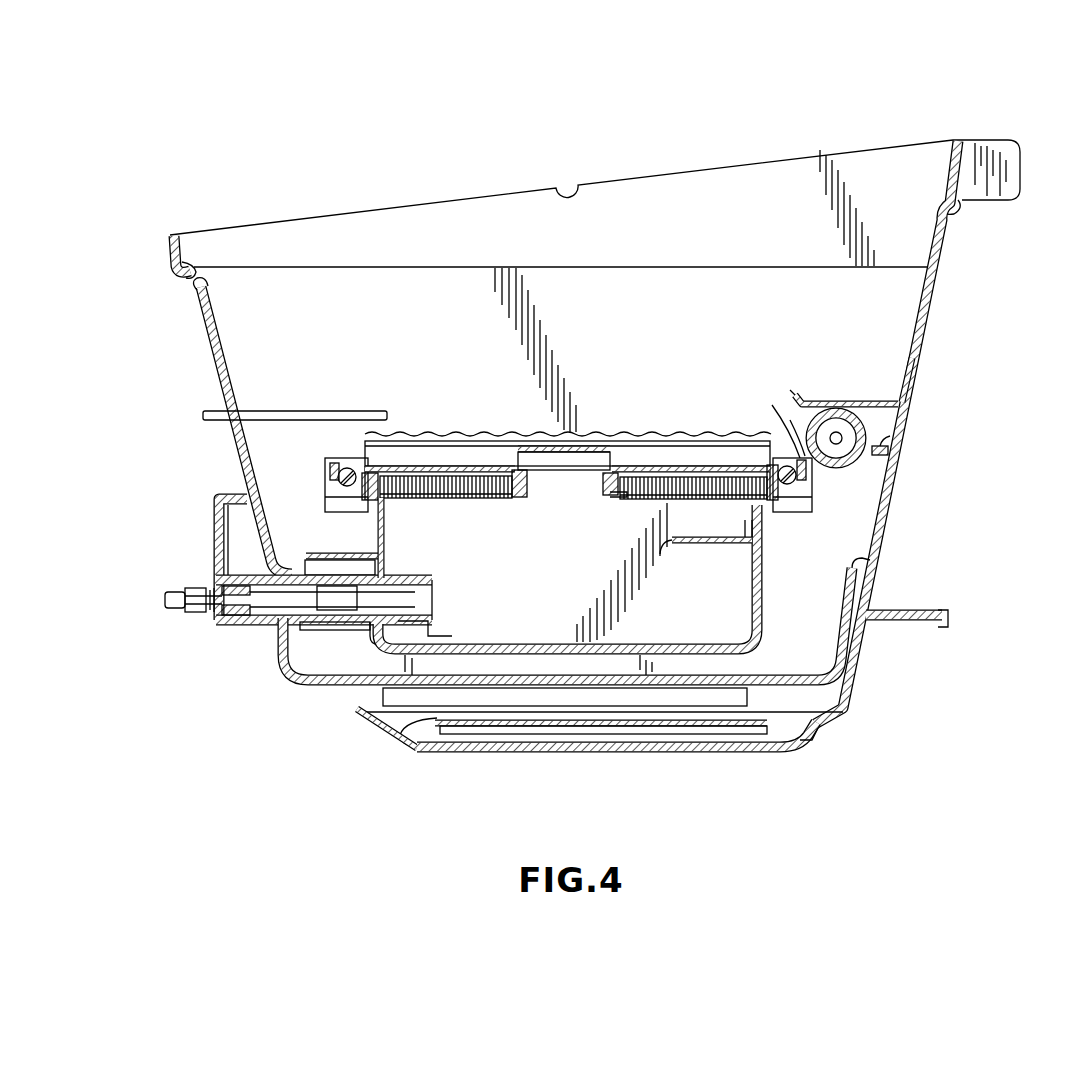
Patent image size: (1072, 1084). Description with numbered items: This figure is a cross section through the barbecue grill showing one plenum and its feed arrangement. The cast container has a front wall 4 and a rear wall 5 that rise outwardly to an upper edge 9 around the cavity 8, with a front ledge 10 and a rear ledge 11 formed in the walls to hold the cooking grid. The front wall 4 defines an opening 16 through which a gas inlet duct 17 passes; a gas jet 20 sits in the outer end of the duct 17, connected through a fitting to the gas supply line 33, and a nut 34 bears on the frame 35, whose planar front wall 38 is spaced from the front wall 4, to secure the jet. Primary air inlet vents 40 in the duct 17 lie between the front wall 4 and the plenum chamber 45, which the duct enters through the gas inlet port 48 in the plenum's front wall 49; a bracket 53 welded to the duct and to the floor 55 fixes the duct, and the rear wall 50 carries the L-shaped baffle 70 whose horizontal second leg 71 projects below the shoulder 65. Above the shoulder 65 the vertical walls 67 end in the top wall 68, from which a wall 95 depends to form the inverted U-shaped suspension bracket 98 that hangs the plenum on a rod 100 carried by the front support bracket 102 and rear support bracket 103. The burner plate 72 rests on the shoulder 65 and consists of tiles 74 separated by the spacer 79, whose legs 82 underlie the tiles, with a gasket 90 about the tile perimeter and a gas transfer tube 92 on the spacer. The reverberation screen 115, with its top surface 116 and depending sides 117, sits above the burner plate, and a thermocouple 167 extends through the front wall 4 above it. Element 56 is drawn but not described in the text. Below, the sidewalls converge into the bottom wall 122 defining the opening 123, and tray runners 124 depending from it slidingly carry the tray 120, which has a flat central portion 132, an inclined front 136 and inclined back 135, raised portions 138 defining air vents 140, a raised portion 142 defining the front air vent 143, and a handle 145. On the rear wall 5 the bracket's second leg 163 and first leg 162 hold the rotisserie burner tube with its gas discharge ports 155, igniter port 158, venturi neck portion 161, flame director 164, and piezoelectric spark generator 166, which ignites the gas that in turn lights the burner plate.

The front wall 4 is at (208, 346).
The rear wall 5 is at (935, 300).
The cavity 8 is at (704, 308).
The upper edge 9 is at (174, 234).
The front ledge 10 is at (200, 265).
The rear ledge 11 is at (946, 205).
The opening 16 is at (283, 622).
The gas inlet duct 17 is at (250, 622).
The gas jet 20 is at (224, 617).
The gas supply line 33 is at (170, 600).
The nut 34 is at (217, 582).
The frame 35 is at (226, 497).
The front wall of frame 38 is at (216, 523).
The primary air inlet vent 40 is at (358, 602).
The plenum chamber 45 is at (760, 613).
The gas inlet port 48 is at (388, 575).
The front wall of plenum chamber 49 is at (386, 537).
The rear wall of plenum chamber 50 is at (754, 607).
The bracket 53 is at (433, 636).
The floor 55 is at (629, 644).
The support plate 56 is at (318, 632).
The shoulder 65 is at (760, 507).
The vertical wall 67 is at (812, 508).
The top wall 68 is at (345, 462).
The baffle 70 is at (671, 546).
The second leg 71 is at (714, 544).
The burner plate 72 is at (508, 470).
The tile 74 is at (474, 500).
The spacer 79 is at (568, 475).
The leg 82 is at (618, 497).
The gasket 90 is at (364, 508).
The gas transfer tube 92 is at (593, 448).
The wall 95 is at (335, 468).
The suspension bracket 98 is at (332, 480).
The rod 100 is at (800, 495).
The front support bracket 102 is at (328, 512).
The rear support bracket 103 is at (814, 494).
The reverberation screen 115 is at (697, 436).
The top surface 116 is at (469, 437).
The sides 117 is at (790, 420).
The tray 120 is at (440, 750).
The bottom wall 122 is at (779, 677).
The opening 123 is at (537, 684).
The tray runner 124 is at (383, 697).
The central rectangular portion 132 is at (695, 750).
The inclined back 135 is at (786, 750).
The inclined front 136 is at (367, 722).
The raised portion 138 is at (433, 720).
The air vent 140 is at (521, 735).
The raised portion 142 is at (822, 722).
The front air vent 143 is at (813, 732).
The handle 145 is at (938, 608).
The gas discharge port 155 is at (778, 398).
The igniter port 158 is at (855, 460).
The neck portion 161 is at (842, 436).
The first leg 162 is at (905, 364).
The second leg 163 is at (872, 402).
The flame director 164 is at (806, 398).
The piezoelectric spark generator 166 is at (889, 447).
The thermocouple 167 is at (388, 410).